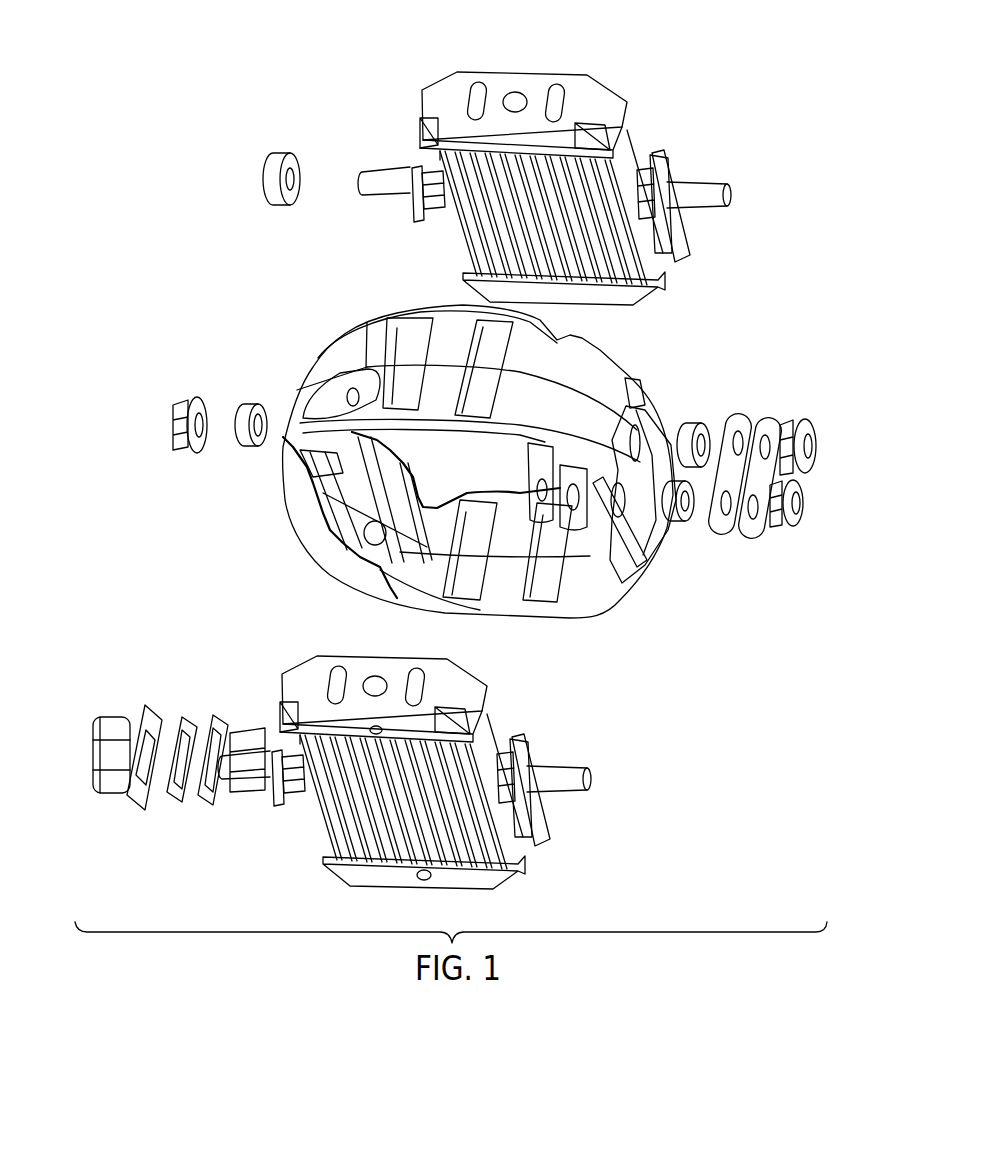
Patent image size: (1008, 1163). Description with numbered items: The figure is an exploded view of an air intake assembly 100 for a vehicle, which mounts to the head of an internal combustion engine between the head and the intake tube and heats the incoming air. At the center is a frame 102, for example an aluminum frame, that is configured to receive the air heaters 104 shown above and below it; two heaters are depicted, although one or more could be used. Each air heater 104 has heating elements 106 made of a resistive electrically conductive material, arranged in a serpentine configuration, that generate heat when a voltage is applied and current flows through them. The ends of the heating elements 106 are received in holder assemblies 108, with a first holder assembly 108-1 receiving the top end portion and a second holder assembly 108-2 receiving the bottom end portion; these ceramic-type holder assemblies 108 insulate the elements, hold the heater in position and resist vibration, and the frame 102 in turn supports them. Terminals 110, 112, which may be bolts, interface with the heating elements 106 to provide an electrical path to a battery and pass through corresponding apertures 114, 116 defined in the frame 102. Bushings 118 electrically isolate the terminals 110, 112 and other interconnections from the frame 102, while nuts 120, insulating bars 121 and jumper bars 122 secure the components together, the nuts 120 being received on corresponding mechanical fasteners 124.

The air intake assembly 100 is at (228, 25).
The frame 102 is at (501, 466).
The air heater 104 is at (600, 60).
The heating element 106 is at (622, 158).
The holder assembly 108 is at (424, 100).
The first holder assembly 108-1 is at (336, 660).
The second holder assembly 108-2 is at (512, 74).
The terminal 110 is at (378, 187).
The terminal 112 is at (728, 190).
The aperture 114 is at (326, 512).
The aperture 116 is at (625, 502).
The bushing 118 is at (268, 170).
The nut 120 is at (195, 398).
The insulating bar 121 is at (742, 414).
The jumper bar 122 is at (755, 525).
The mechanical fastener 124 is at (372, 170).